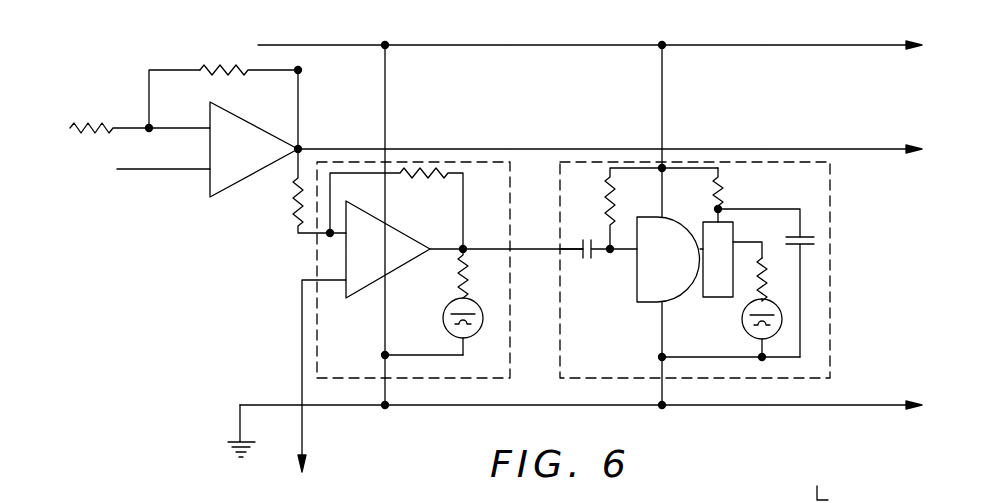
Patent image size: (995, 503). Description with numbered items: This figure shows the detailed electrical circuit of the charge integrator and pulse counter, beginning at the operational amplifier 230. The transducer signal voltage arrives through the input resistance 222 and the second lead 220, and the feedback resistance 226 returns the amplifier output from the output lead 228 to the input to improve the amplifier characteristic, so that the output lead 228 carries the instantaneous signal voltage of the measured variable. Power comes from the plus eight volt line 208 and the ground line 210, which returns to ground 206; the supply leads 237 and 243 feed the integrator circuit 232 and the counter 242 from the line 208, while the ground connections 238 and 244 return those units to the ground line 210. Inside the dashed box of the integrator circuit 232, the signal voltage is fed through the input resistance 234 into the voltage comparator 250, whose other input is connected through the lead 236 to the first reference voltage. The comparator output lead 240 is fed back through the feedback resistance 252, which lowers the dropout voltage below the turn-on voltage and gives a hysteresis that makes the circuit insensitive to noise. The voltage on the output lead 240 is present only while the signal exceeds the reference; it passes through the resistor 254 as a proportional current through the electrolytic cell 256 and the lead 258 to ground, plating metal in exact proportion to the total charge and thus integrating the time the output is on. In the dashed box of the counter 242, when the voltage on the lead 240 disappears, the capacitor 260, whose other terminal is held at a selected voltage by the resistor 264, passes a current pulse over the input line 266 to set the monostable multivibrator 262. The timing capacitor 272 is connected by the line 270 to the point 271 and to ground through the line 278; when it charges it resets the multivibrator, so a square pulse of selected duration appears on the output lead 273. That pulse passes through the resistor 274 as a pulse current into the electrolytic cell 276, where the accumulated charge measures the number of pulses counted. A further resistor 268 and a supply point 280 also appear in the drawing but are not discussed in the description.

The ground 206 is at (238, 423).
The plus 8 volt line 208 is at (435, 45).
The ground line 210 is at (358, 408).
The second lead 220 is at (170, 172).
The input resistance 222 is at (96, 124).
The feedback resistance 226 is at (226, 68).
The output lead 228 is at (505, 160).
The operational amplifier 230 is at (237, 190).
The integrator circuit 232 is at (405, 160).
The input resistance 234 is at (290, 205).
The reference voltage lead 236 is at (301, 352).
The supply lead 237 is at (384, 102).
The ground connection 238 is at (390, 390).
The output lead 240 is at (538, 247).
The counter 242 is at (712, 160).
The supply lead 243 is at (663, 102).
The ground connection 244 is at (664, 387).
The voltage comparator 250 is at (400, 238).
The feedback resistance 252 is at (413, 180).
The resistor 254 is at (470, 280).
The electrolytic cell 256 is at (452, 300).
The lead 258 is at (440, 360).
The capacitor 260 is at (576, 262).
The monostable multivibrator 262 is at (635, 293).
The resistor 264 is at (605, 212).
The input line 266 is at (628, 252).
The resistor 268 is at (722, 202).
The line 270 is at (770, 210).
The point 271 is at (716, 208).
The capacitor 272 is at (805, 238).
The output lead 273 is at (743, 242).
The resistor 274 is at (768, 282).
The electrolytic cell 276 is at (742, 325).
The line 278 is at (802, 332).
The supply terminal 280 is at (840, 498).